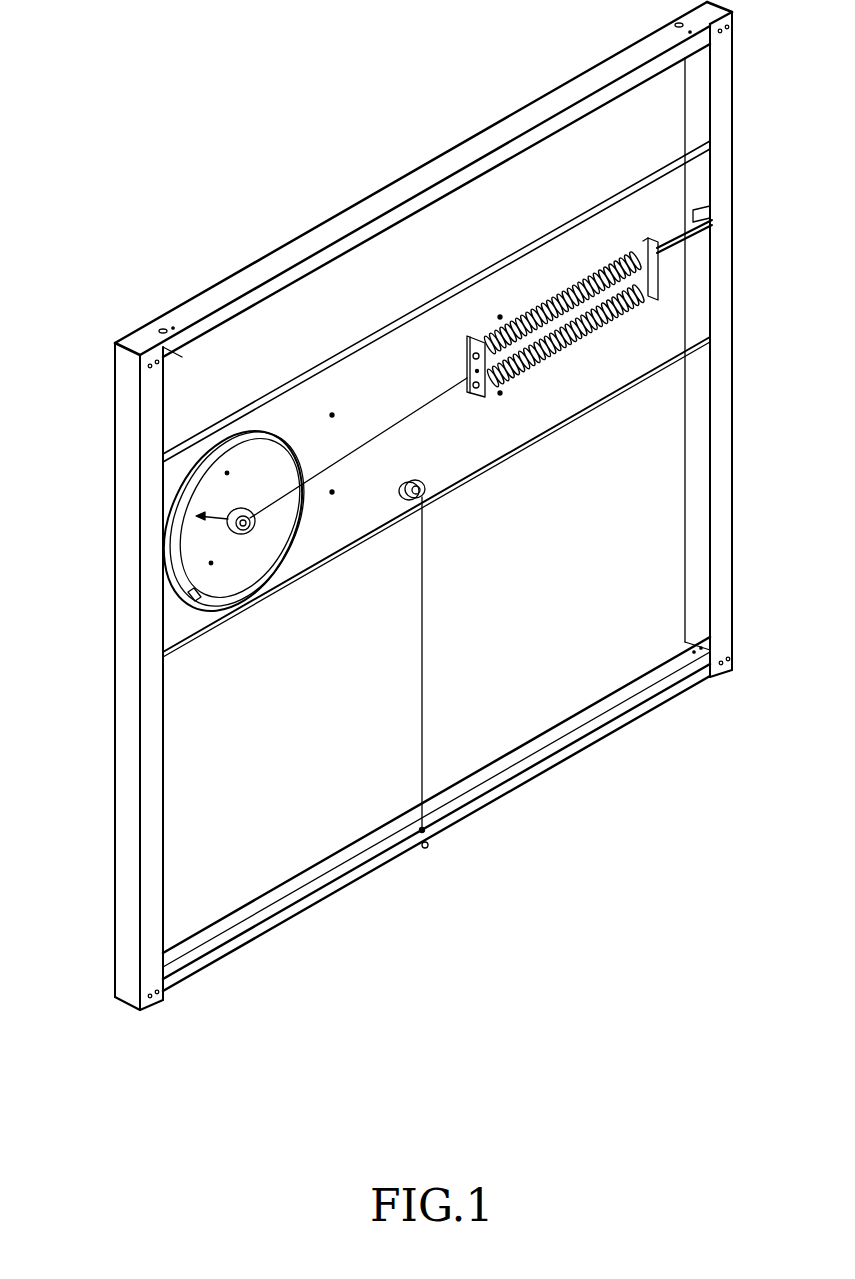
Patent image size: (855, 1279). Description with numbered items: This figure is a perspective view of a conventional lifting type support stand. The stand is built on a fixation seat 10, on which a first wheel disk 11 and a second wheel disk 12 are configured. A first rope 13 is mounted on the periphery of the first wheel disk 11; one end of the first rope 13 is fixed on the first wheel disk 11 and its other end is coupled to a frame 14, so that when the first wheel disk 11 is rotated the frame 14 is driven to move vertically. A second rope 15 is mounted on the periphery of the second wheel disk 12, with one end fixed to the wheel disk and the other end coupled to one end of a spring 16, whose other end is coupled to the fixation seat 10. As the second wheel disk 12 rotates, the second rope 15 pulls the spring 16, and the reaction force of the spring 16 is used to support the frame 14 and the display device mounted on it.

The fixation seat 10 is at (598, 380).
The first wheel disk 11 is at (213, 593).
The second wheel disk 12 is at (428, 495).
The first rope 13 is at (366, 505).
The frame 14 is at (131, 606).
The second rope 15 is at (412, 400).
The spring 16 is at (560, 292).